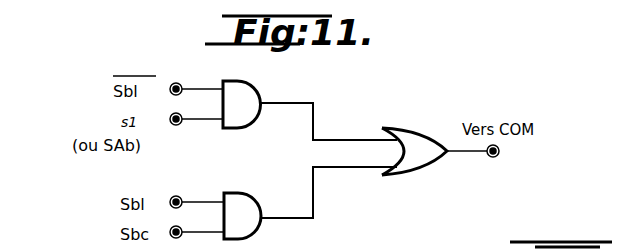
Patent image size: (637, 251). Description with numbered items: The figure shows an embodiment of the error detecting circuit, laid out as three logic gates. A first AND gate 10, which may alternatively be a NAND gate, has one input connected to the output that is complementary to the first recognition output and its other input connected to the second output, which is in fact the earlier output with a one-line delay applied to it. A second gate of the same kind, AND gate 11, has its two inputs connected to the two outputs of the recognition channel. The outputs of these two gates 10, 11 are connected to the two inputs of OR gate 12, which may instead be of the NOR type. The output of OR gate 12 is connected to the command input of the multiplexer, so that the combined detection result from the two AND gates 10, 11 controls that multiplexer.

The AND gate 10 is at (252, 92).
The AND gate 11 is at (245, 211).
The OR gate 12 is at (422, 157).